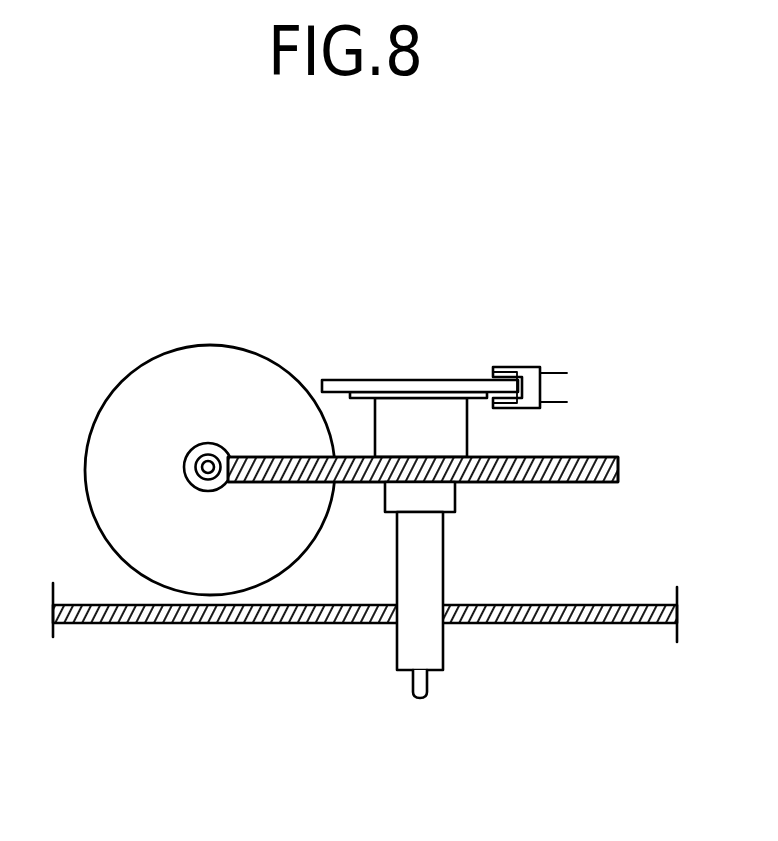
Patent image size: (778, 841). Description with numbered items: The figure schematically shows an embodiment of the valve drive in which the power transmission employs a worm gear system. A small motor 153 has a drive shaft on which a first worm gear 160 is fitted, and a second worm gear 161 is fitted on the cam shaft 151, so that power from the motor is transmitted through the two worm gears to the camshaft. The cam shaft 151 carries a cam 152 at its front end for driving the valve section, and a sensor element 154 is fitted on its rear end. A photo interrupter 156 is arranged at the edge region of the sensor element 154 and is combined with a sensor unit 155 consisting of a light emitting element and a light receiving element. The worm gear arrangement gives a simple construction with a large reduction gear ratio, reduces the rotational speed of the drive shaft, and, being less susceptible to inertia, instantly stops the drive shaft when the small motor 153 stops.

The cam shaft 151 is at (477, 634).
The cam 152 is at (450, 728).
The small motor 153 is at (210, 399).
The sensor element 154 is at (420, 330).
The sensor unit 155 is at (512, 303).
The photo interrupter 156 is at (556, 305).
The first worm gear 160 is at (259, 347).
The second worm gear 161 is at (458, 407).